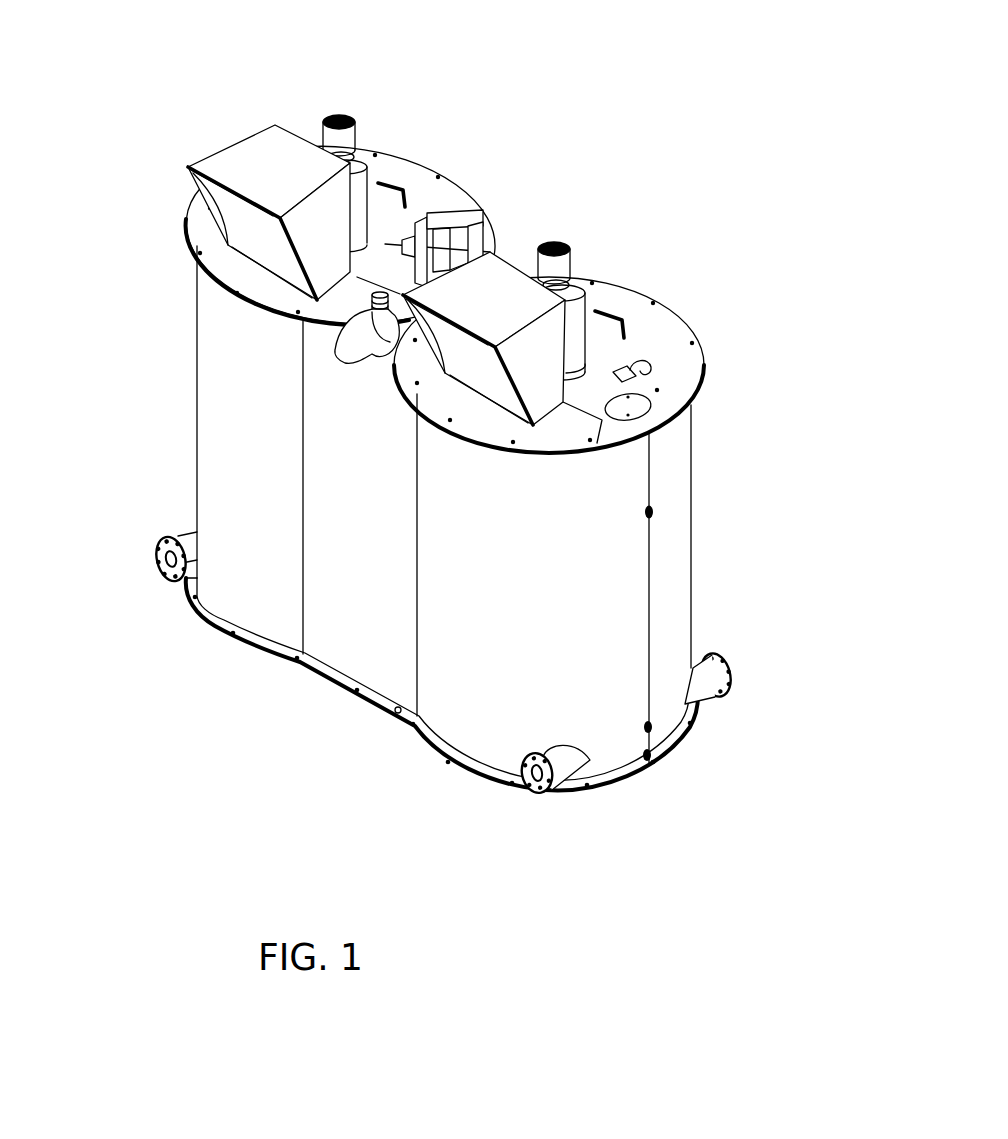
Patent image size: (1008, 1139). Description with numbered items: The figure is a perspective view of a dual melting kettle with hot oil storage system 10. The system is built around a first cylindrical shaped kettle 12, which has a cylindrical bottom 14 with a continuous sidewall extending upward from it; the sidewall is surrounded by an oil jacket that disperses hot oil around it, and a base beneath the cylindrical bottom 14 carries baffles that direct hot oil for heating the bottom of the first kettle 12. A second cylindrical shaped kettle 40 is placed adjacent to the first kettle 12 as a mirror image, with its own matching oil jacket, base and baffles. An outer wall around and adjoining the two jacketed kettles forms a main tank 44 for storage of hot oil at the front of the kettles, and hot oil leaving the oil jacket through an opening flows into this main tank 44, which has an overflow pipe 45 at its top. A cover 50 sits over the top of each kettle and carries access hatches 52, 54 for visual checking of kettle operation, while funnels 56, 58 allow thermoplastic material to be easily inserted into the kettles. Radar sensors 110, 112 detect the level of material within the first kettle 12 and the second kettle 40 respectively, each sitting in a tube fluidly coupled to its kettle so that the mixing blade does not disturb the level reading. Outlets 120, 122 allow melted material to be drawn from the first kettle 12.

The dual melting kettle with hot oil storage system 10 is at (462, 444).
The first cylindrical shaped kettle 12 is at (733, 537).
The cylindrical bottom 14 is at (661, 766).
The second cylindrical shaped kettle 40 is at (180, 392).
The main tank 44 is at (360, 650).
The overflow pipe 45 is at (353, 347).
The cover 50 is at (672, 382).
The access hatch 52 is at (643, 342).
The access hatch 54 is at (407, 190).
The funnel 56 is at (493, 272).
The funnel 58 is at (262, 140).
The radar sensor 110 is at (443, 213).
The radar sensor 112 is at (478, 218).
The outlet 120 is at (572, 762).
The outlet 122 is at (715, 697).